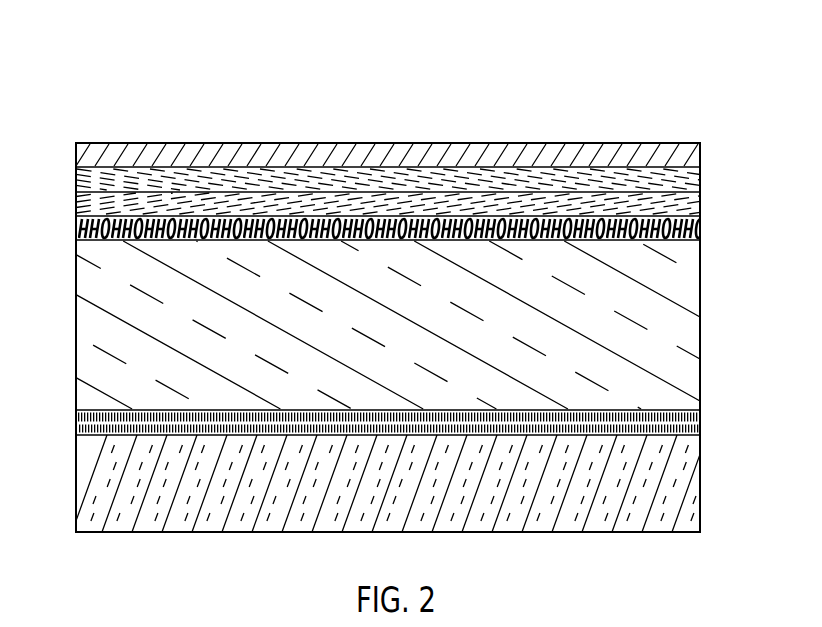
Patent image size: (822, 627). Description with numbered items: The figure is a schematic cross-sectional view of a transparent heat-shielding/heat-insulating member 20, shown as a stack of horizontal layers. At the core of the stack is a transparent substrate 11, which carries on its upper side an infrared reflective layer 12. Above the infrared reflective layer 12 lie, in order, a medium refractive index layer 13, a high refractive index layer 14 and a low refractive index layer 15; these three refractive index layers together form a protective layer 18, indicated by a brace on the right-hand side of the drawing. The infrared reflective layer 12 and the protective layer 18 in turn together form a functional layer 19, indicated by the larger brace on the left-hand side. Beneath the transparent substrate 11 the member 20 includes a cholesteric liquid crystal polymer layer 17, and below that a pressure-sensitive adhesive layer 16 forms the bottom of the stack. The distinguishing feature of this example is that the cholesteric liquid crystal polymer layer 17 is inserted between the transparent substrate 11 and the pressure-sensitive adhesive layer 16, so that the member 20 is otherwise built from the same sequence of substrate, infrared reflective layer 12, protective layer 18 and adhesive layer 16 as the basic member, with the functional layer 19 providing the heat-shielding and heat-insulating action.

The transparent heat-shielding/heat-insulating member 20 is at (497, 117).
The functional layer 19 is at (68, 145).
The protective layer 18 is at (750, 143).
The low refractive index layer 15 is at (700, 152).
The high refractive index layer 14 is at (693, 177).
The medium refractive index layer 13 is at (687, 200).
The infrared reflective layer 12 is at (692, 223).
The transparent substrate 11 is at (672, 325).
The cholesteric liquid crystal polymer layer 17 is at (677, 420).
The pressure-sensitive adhesive layer 16 is at (667, 480).